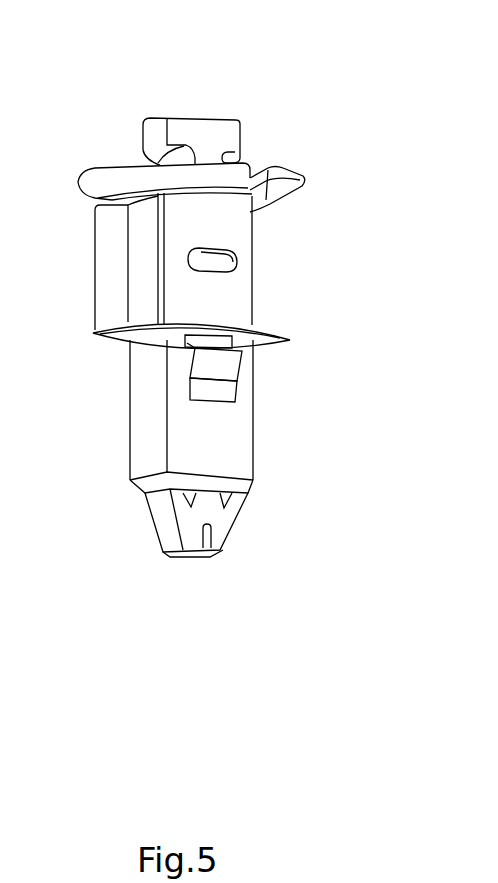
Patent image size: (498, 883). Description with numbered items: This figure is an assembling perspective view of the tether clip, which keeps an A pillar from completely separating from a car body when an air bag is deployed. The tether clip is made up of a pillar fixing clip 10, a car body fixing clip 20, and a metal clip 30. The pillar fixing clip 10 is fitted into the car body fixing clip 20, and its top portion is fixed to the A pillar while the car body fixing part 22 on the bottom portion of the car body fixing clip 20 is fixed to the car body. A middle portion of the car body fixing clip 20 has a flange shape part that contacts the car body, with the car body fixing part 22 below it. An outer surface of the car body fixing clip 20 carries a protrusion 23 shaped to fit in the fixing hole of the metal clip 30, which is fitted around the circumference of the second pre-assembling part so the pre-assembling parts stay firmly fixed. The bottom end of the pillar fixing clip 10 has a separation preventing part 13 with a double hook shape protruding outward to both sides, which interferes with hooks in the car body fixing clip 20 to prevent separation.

The pillar fixing clip 10 is at (103, 100).
The metal clip 30 is at (230, 232).
The protrusion 23 is at (237, 265).
The car body fixing part 22 is at (213, 365).
The car body fixing clip 20 is at (203, 437).
The separation preventing part 13 is at (195, 520).